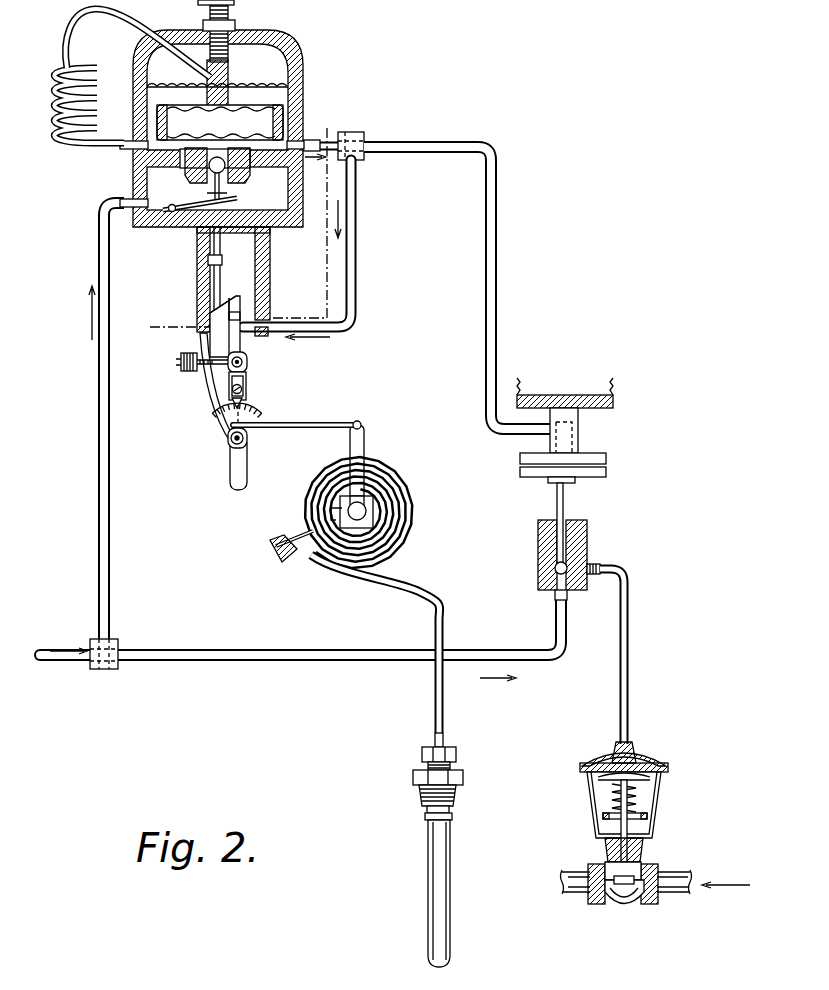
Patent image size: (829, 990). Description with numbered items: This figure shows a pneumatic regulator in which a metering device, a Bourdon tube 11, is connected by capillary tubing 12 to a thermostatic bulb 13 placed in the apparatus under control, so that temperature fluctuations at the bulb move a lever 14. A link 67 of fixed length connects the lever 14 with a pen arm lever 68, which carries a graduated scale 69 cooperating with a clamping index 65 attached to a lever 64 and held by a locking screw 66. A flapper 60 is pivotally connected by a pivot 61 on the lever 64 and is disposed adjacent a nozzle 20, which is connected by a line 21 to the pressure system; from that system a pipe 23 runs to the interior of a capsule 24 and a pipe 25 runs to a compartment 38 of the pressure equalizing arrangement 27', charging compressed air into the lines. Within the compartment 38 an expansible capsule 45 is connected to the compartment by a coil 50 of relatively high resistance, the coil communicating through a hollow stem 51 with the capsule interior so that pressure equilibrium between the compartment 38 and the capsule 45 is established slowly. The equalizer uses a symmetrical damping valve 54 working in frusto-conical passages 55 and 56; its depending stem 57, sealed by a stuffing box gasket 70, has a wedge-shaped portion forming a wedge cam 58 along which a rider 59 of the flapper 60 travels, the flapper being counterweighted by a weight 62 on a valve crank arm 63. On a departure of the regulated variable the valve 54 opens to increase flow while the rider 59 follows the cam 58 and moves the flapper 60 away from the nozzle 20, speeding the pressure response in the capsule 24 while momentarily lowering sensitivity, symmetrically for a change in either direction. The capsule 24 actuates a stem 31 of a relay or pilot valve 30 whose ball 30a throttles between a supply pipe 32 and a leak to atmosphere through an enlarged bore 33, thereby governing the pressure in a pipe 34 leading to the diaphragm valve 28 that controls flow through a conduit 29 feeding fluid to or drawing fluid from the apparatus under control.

The Bourdon tube 11 is at (413, 503).
The capillary tubing 12 is at (433, 612).
The thermostatic bulb 13 is at (428, 845).
The lever 14 is at (366, 432).
The nozzle 20 is at (228, 393).
The conduit 21 is at (358, 274).
The pipe 23 is at (422, 150).
The capsule 24 is at (604, 462).
The pipe 25 is at (322, 140).
The pressure equalizing arrangement 27' is at (273, 227).
The diaphragm valve 28 is at (662, 792).
The conduit 29 is at (670, 868).
The pilot valve 30 is at (588, 534).
The ball 30a is at (556, 592).
The stem 31 is at (556, 497).
The supply pipe 32 is at (303, 664).
The enlarged bore 33 is at (566, 525).
The pipe 34 is at (630, 604).
The compartment 38 is at (305, 88).
The expansible capsule 45 is at (290, 118).
The coil 50 is at (102, 68).
The hollow stem 51 is at (229, 74).
The symmetrical damping valve 54 is at (203, 180).
The frusto-conical passage 55 is at (232, 192).
The frusto-conical passage 56 is at (243, 165).
The stem 57 is at (222, 272).
The wedge cam 58 is at (224, 303).
The rider 59 is at (236, 300).
The flapper 60 is at (240, 314).
The pivot 61 is at (250, 362).
The weight 62 is at (178, 356).
The valve crank arm 63 is at (203, 368).
The lever 64 is at (248, 382).
The clamping index 65 is at (247, 402).
The locking screw 66 is at (250, 390).
The link 67 is at (306, 425).
The pen arm lever 68 is at (226, 422).
The graduated scale 69 is at (210, 407).
The stuffing box gasket 70 is at (197, 233).